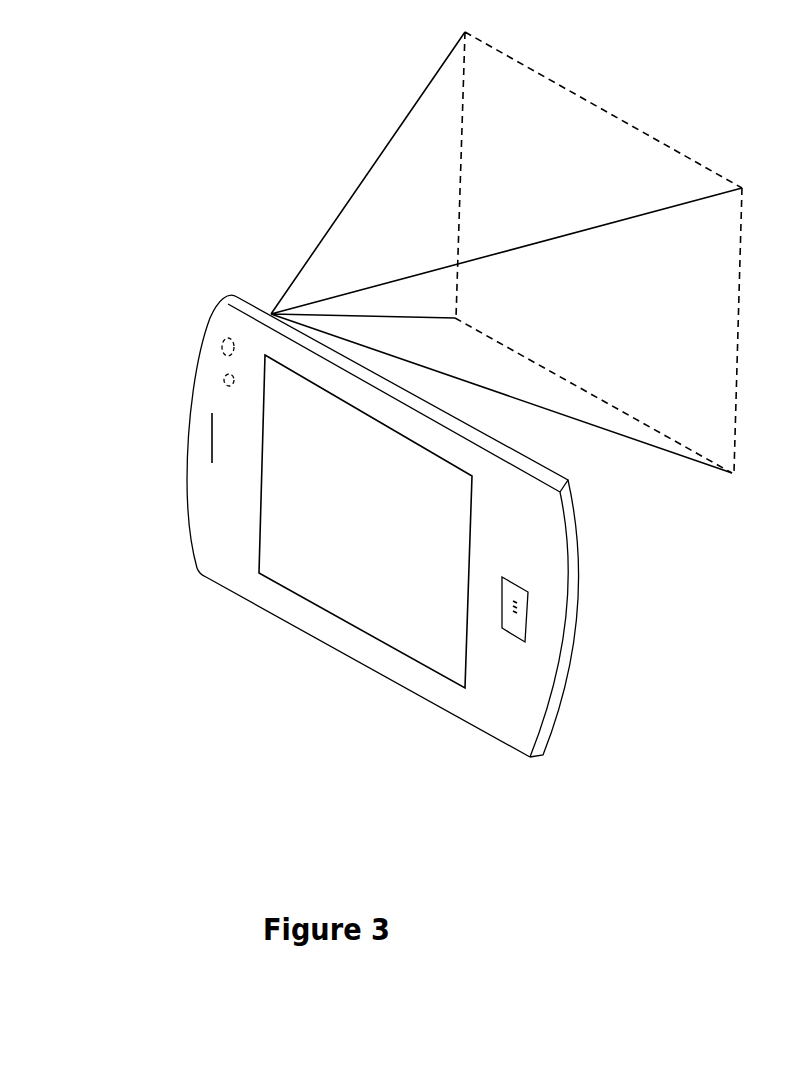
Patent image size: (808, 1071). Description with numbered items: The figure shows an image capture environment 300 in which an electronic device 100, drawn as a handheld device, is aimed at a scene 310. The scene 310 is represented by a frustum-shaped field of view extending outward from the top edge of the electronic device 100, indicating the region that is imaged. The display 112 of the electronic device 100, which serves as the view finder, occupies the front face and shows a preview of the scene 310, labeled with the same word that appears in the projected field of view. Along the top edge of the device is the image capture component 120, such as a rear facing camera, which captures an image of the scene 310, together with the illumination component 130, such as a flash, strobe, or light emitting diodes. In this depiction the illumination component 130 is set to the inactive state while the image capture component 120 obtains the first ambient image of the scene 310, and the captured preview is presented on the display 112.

The image capture environment 300 is at (173, 86).
The scene 310 is at (714, 152).
The electronic device 100 is at (578, 545).
The display 112 is at (262, 523).
The image capture component 120 is at (206, 330).
The illumination component 130 is at (233, 390).